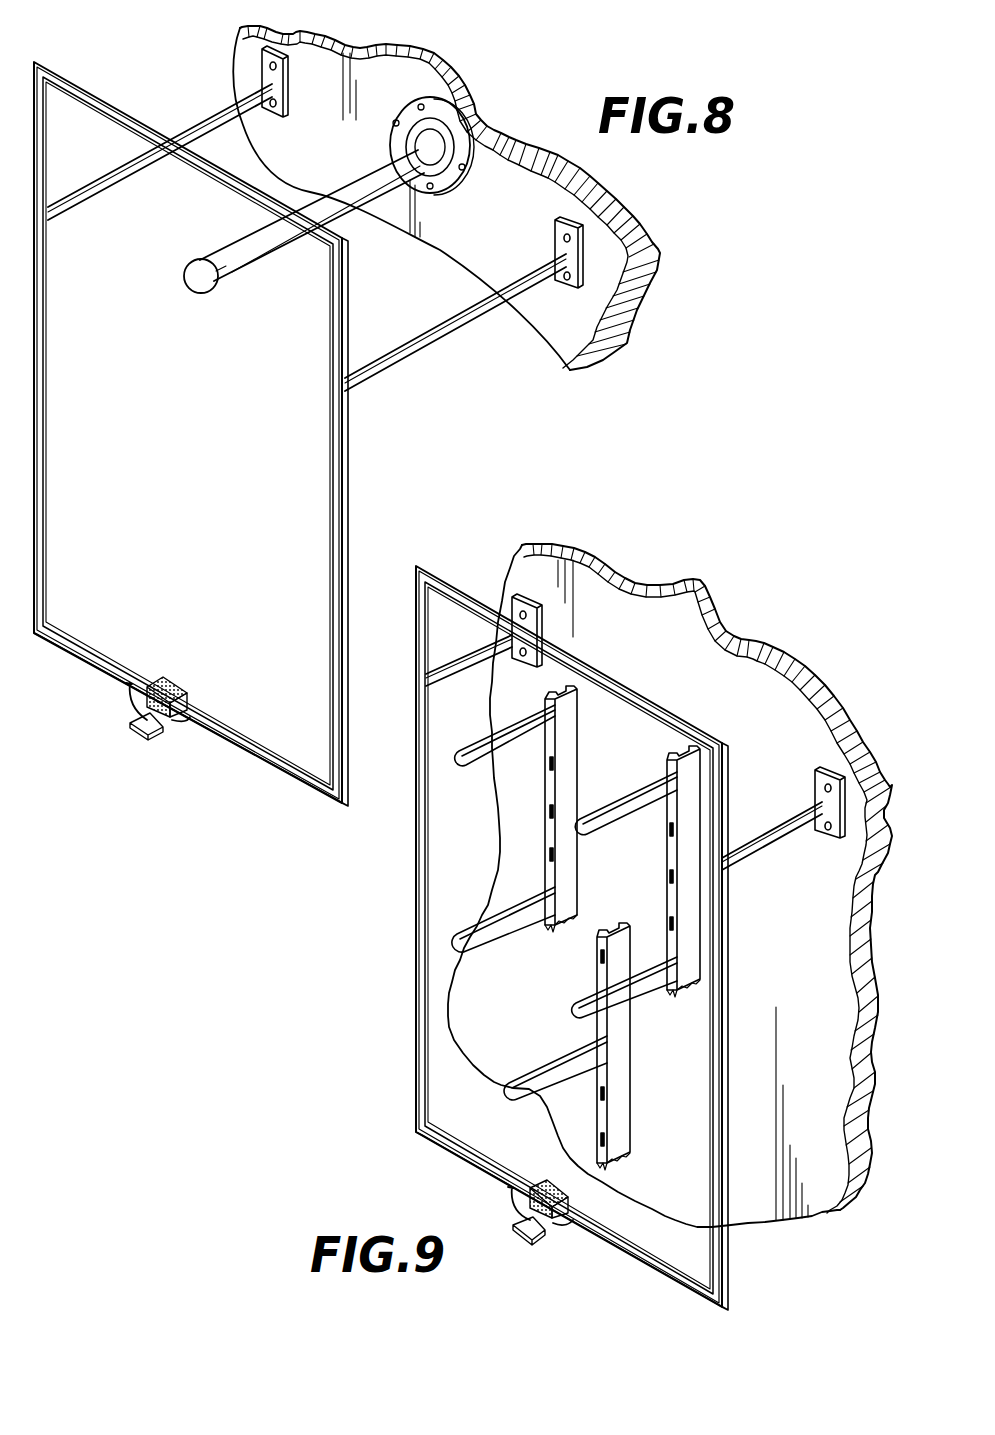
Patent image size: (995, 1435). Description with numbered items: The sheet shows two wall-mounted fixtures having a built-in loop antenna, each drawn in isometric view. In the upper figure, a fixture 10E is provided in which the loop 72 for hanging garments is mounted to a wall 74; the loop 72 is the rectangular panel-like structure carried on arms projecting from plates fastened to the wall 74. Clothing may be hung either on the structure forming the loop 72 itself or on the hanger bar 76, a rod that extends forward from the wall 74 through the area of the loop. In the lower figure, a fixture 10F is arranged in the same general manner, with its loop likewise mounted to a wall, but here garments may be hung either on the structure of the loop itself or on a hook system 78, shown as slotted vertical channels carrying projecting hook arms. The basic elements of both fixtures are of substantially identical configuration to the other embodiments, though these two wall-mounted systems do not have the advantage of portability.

In FIG. 8, the fixture 10E is at (664, 198).
In FIG. 9, the fixture 10F is at (708, 538).
In FIG. 8, the loop 72 is at (338, 474).
In FIG. 8, the wall 74 is at (570, 316).
In FIG. 8, the hanger bar 76 is at (236, 268).
In FIG. 9, the hook system 78 is at (570, 751).